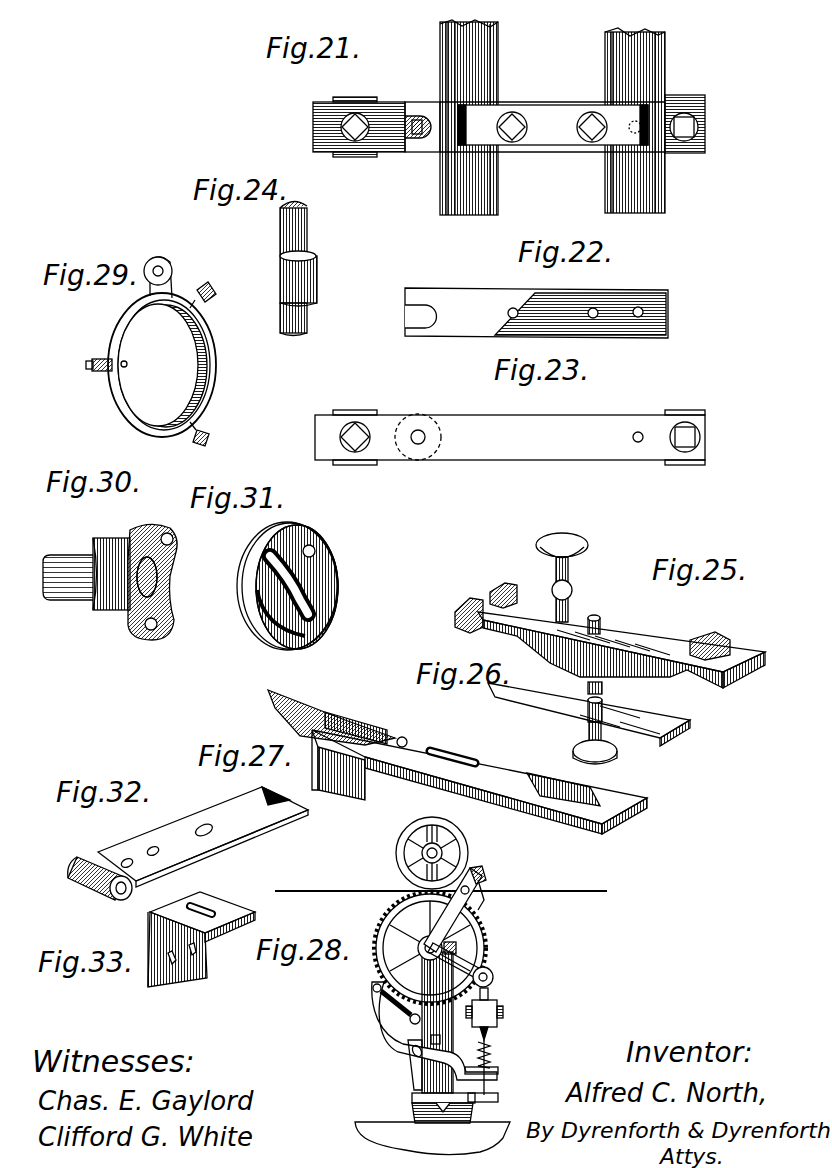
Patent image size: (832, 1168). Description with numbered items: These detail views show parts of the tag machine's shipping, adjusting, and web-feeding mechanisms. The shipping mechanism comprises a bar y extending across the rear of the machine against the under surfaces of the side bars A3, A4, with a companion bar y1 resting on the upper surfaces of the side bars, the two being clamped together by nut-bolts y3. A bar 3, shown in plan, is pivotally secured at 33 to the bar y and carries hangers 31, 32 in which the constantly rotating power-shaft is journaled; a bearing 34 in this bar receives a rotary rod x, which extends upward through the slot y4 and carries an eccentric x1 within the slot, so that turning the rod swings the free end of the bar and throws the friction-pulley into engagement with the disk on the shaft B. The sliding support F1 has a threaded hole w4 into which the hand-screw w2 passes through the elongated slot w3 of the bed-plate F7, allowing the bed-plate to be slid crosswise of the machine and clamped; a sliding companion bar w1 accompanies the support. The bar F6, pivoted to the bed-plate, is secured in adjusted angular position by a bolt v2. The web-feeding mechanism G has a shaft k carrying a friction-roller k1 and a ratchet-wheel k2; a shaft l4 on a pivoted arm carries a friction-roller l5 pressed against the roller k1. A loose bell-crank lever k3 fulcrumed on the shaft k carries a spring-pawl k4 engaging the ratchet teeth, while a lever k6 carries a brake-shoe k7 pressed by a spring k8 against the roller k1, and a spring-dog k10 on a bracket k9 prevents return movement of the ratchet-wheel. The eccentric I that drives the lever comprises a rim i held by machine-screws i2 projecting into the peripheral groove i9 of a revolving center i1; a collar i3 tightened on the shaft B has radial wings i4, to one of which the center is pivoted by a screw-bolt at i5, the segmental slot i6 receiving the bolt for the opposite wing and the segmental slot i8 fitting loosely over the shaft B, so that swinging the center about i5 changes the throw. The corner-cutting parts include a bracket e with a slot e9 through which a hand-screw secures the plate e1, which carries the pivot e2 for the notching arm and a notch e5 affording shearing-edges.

In FIG. 21, the side bar A4 is at (456, 72).
In FIG. 28, the side bar A4 is at (385, 1134).
In FIG. 21, the side bar A3 is at (650, 60).
In FIG. 21, the bar y is at (433, 152).
In FIG. 22, the bar y is at (455, 296).
In FIG. 21, the companion bar y1 is at (549, 102).
In FIG. 21, the nut-bolts y3 is at (592, 141).
In FIG. 22, the nut-bolts y3 is at (638, 318).
In FIG. 21, the slot y4 is at (416, 141).
In FIG. 22, the slot y4 is at (410, 312).
In FIG. 23, the bar 3 is at (536, 446).
In FIG. 21, the hanger 31 is at (697, 154).
In FIG. 23, the hanger 31 is at (686, 412).
In FIG. 21, the hanger 32 is at (363, 155).
In FIG. 23, the hanger 32 is at (355, 413).
In FIG. 23, the pivot 33 is at (638, 444).
In FIG. 23, the bearing 34 is at (418, 446).
In FIG. 24, the rotary rod x is at (308, 230).
In FIG. 24, the eccentric x1 is at (318, 272).
In FIG. 29, the eccentric I is at (172, 347).
In FIG. 30, the eccentric I is at (157, 582).
In FIG. 31, the eccentric I is at (291, 586).
In FIG. 29, the rim i is at (128, 398).
In FIG. 31, the revolving center i1 is at (314, 536).
In FIG. 29, the machine-screws i2 is at (96, 360).
In FIG. 30, the collar i3 is at (108, 550).
In FIG. 30, the radial wings i4 is at (174, 540).
In FIG. 31, the screw-bolt pivot i5 is at (316, 551).
In FIG. 31, the segmental slot i6 is at (292, 630).
In FIG. 31, the segmental slot i8 is at (312, 600).
In FIG. 31, the peripheral groove i9 is at (268, 600).
In FIG. 30, the shaft B is at (84, 600).
In FIG. 25, the sliding support F1 is at (610, 635).
In FIG. 25, the hand-screw w2 is at (546, 562).
In FIG. 25, the threaded hole w4 is at (576, 615).
In FIG. 26, the plate and foot w1 is at (548, 698).
In FIG. 27, the bed-plate F7 is at (447, 744).
In FIG. 27, the bar F6 is at (300, 710).
In FIG. 27, the bolt v2 is at (405, 737).
In FIG. 27, the elongated slot w3 is at (440, 760).
In FIG. 32, the plate e1 is at (163, 836).
In FIG. 32, the notch e5 is at (276, 808).
In FIG. 32, the pivot e2 is at (94, 886).
In FIG. 33, the bracket e is at (234, 912).
In FIG. 33, the slot e9 is at (204, 904).
In FIG. 28, the wheel G is at (328, 847).
In FIG. 28, the friction-roller l5 is at (400, 840).
In FIG. 28, the shaft l4 is at (424, 858).
In FIG. 28, the shaft k is at (412, 940).
In FIG. 28, the friction-roller k1 is at (458, 946).
In FIG. 28, the ratchet-wheel k2 is at (492, 957).
In FIG. 28, the bell-crank lever k3 is at (472, 900).
In FIG. 28, the spring-pawl k4 is at (482, 906).
In FIG. 28, the lever k6 is at (392, 1032).
In FIG. 28, the brake-shoe k7 is at (370, 984).
In FIG. 28, the spring k8 is at (496, 1052).
In FIG. 28, the bracket k9 is at (412, 1054).
In FIG. 28, the spring-dog k10 is at (408, 1014).